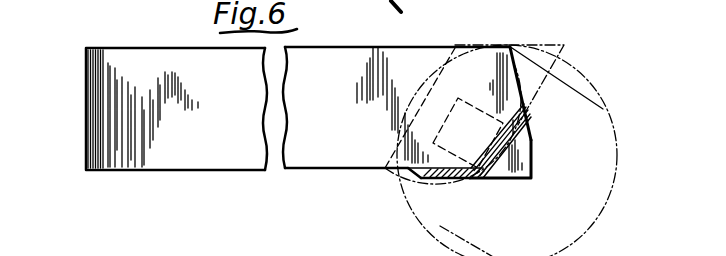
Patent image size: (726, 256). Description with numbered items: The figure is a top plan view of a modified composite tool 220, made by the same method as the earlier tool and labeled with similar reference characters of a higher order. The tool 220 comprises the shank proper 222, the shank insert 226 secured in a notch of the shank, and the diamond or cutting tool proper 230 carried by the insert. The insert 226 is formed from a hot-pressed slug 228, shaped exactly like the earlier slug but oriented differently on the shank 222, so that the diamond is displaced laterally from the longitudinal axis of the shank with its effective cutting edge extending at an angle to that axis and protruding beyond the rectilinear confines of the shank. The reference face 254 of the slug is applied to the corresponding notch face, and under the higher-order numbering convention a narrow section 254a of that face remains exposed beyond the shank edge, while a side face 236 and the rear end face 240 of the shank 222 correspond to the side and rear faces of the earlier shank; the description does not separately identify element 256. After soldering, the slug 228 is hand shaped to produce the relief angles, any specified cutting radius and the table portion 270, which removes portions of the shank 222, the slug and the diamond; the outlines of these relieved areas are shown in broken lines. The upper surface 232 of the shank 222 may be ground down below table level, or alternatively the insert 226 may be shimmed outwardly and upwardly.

The composite tool 220 is at (240, 98).
The shank proper 222 is at (338, 63).
The shank insert 226 is at (449, 185).
The hot-pressed slug 228 is at (603, 207).
The diamond or cutting tool proper 230 is at (510, 186).
The upper surface of the shank 232 is at (313, 155).
The first body portion 236 is at (230, 170).
The first body 240 is at (86, 108).
The reference face 254 is at (432, 177).
The layer section 254a is at (523, 110).
The cutting edge 256 is at (483, 178).
The table portion 270 is at (518, 155).